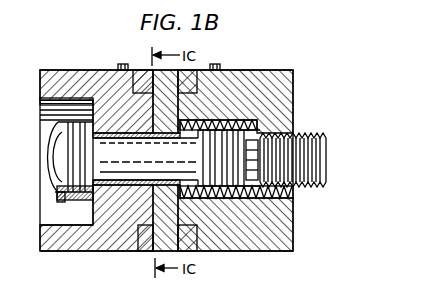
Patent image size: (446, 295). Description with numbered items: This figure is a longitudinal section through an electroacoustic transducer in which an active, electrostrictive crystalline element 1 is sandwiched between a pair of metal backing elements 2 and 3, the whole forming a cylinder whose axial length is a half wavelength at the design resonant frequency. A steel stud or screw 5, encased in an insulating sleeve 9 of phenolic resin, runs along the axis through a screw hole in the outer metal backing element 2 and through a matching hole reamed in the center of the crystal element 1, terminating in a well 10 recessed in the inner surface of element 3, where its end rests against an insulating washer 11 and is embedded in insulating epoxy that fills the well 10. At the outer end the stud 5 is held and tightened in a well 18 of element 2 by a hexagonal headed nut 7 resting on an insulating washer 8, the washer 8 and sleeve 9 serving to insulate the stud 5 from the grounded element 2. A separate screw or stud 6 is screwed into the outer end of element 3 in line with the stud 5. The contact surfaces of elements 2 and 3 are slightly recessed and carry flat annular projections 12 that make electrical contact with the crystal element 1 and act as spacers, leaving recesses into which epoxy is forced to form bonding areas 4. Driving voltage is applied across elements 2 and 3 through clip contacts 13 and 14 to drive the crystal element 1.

The electrostrictive crystalline element 1 is at (158, 252).
The outer metal backing element 2 is at (48, 252).
The metal backing element 3 is at (285, 100).
The bonding areas 4 is at (140, 253).
The steel stud or screw 5 is at (50, 168).
The screw or stud 6 is at (323, 155).
The hexagonal headed nut 7 is at (62, 130).
The insulating washer 8 is at (90, 200).
The insulating sleeve 9 is at (110, 138).
The well 10 is at (257, 200).
The insulating washer 11 is at (268, 132).
The annular projection 12 is at (155, 100).
The clip contact 13 is at (118, 66).
The clip contact 14 is at (227, 66).
The well 18 is at (40, 106).